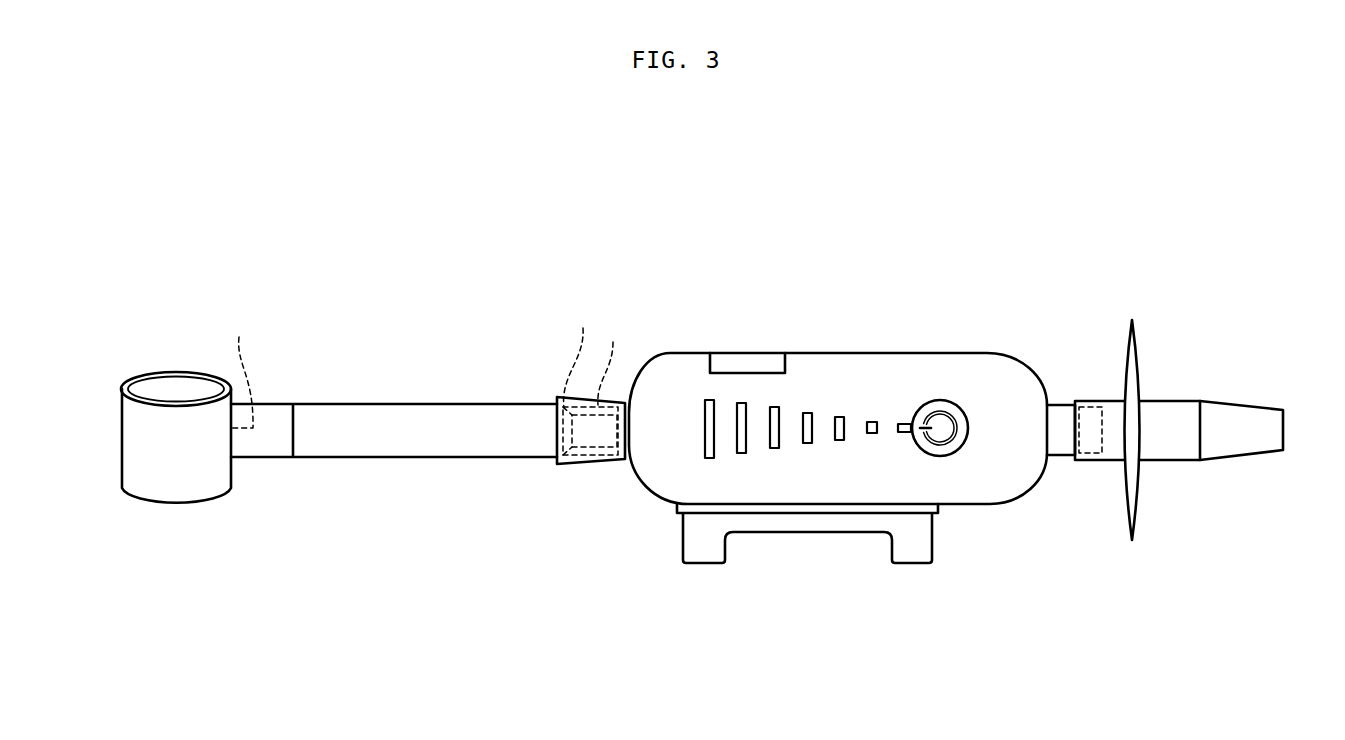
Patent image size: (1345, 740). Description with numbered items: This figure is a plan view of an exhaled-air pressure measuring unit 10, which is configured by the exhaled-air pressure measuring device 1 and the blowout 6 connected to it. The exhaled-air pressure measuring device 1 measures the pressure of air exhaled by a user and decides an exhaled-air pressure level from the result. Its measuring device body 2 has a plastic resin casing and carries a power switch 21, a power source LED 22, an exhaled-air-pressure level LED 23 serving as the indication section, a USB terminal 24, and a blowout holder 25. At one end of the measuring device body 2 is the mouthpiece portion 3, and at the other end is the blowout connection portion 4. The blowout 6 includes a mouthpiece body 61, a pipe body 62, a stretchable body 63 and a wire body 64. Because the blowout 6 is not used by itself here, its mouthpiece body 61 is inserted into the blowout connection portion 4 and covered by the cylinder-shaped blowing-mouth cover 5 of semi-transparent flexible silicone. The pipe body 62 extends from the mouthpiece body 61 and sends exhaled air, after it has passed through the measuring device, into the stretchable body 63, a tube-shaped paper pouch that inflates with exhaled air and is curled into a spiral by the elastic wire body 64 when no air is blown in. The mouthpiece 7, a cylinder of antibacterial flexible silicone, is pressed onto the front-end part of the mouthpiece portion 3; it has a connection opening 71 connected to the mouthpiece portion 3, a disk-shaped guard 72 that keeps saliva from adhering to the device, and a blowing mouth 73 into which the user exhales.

The exhaled-air pressure measuring device 1 is at (928, 290).
The measuring device body 2 is at (798, 350).
The mouthpiece portion 3 is at (1064, 404).
The blowout connection portion 4 is at (592, 388).
The blowing-mouth cover 5 is at (574, 465).
The blowout 6 is at (377, 398).
The mouthpiece 7 is at (1188, 396).
The exhaled-air pressure measuring unit 10 is at (587, 247).
The power switch 21 is at (940, 457).
The power source LED 22 is at (905, 424).
The exhaled-air-pressure level LED 23 is at (872, 436).
The USB terminal 24 is at (715, 374).
The blowout holder 25 is at (838, 532).
The mouthpiece body 61 is at (576, 356).
The pipe body 62 is at (483, 402).
The stretchable body 63 is at (162, 371).
The wire body 64 is at (242, 369).
The connection opening 71 is at (1088, 463).
The guard 72 is at (1137, 350).
The blowing mouth 73 is at (1272, 404).